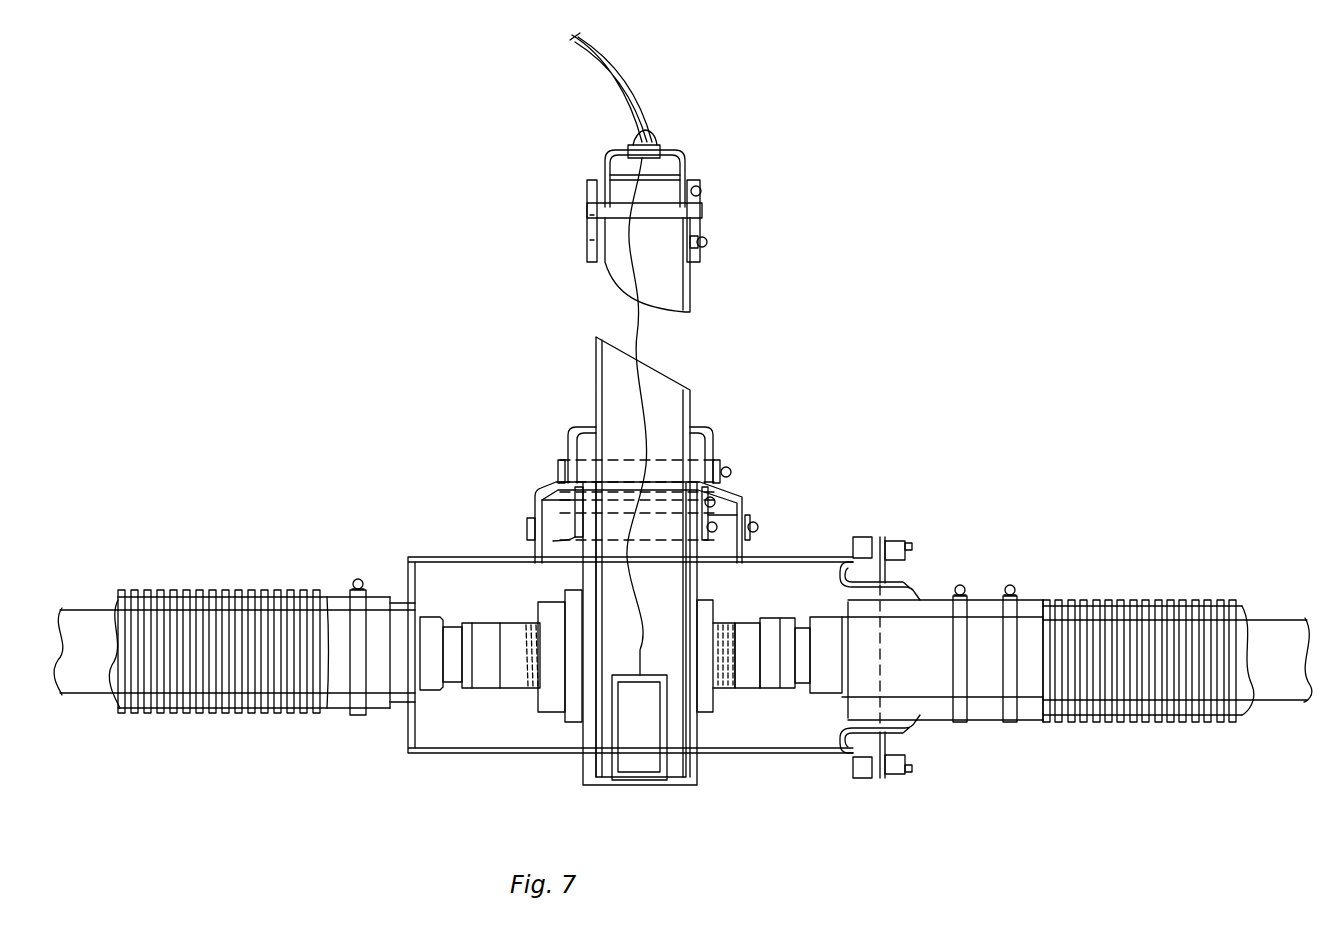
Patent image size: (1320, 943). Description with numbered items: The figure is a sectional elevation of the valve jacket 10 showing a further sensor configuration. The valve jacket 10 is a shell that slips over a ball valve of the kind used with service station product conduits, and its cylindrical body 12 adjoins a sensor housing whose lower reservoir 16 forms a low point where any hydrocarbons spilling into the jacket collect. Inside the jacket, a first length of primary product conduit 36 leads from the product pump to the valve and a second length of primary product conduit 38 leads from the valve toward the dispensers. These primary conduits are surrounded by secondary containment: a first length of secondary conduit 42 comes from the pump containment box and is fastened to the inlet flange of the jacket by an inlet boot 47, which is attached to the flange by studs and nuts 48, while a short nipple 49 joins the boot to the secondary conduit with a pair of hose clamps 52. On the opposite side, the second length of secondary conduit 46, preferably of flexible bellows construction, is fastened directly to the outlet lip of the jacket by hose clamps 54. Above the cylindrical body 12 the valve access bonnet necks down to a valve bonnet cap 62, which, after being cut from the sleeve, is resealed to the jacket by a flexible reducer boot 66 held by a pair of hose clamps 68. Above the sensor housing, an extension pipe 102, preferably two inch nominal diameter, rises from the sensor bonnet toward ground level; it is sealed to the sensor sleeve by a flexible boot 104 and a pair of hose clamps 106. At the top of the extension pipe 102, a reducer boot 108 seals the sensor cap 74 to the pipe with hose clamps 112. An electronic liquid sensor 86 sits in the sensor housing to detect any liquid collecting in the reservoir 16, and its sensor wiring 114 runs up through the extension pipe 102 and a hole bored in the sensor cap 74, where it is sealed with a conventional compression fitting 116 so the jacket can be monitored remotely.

The valve jacket 10 is at (453, 528).
The cylindrical body 12 is at (405, 758).
The lower reservoir 16 is at (677, 768).
The first length of primary product conduit 36 is at (902, 628).
The second length of primary product conduit 38 is at (94, 678).
The first length of secondary conduit 42 is at (1153, 568).
The second length of secondary conduit 46 is at (279, 592).
The inlet boot 47 is at (907, 593).
The studs and nuts 48 is at (905, 778).
The short nipple 49 is at (1044, 716).
The hose clamps 52 is at (1012, 588).
The hose clamps 54 is at (358, 580).
The valve bonnet cap 62 is at (707, 427).
The flexible reducer boot 66 is at (556, 484).
The hose clamps 68 is at (729, 468).
The sensor cap 74 is at (680, 148).
The electronic liquid sensor 86 is at (636, 748).
The extension pipe 102 is at (695, 298).
The flexible boot 104 is at (714, 503).
The hose clamps 106 is at (717, 485).
The reducer boot 108 is at (698, 222).
The hose clamps 112 is at (701, 188).
The sensor wiring 114 is at (630, 383).
The compression fitting 116 is at (628, 140).